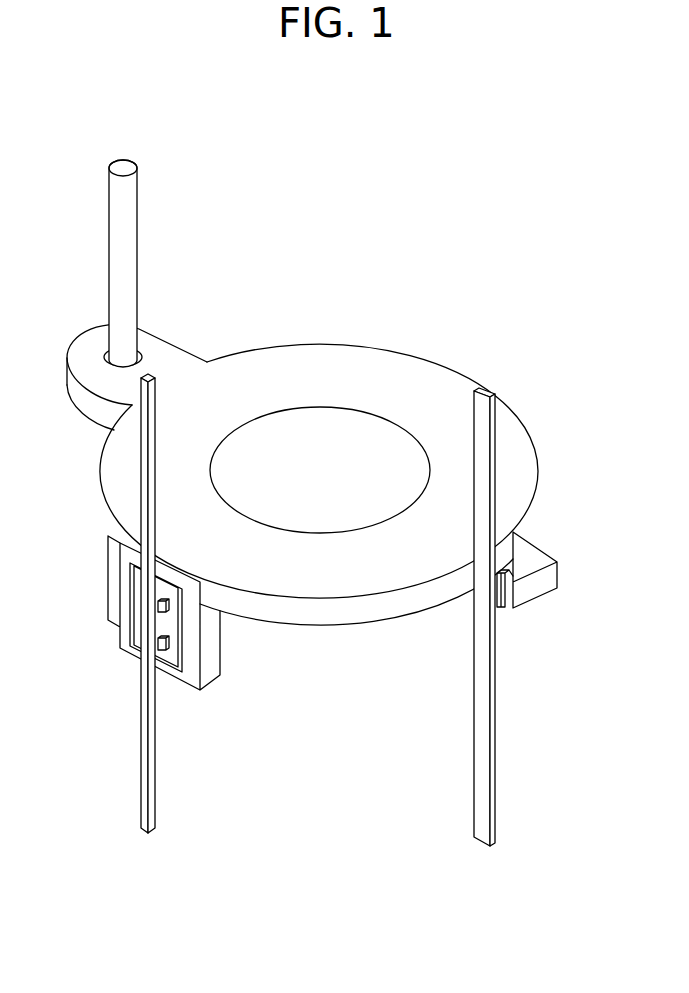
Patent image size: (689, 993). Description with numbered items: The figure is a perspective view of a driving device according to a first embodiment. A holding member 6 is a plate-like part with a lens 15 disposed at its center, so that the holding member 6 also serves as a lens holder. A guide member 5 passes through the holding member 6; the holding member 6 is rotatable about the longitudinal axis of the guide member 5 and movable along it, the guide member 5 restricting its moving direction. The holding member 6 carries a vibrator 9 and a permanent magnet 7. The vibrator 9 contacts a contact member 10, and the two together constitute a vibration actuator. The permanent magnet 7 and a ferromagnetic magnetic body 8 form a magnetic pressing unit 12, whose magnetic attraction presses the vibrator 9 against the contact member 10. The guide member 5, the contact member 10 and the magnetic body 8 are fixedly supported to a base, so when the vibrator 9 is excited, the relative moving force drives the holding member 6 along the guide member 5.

The guide member 5 is at (121, 217).
The holding member 6 is at (302, 456).
The lens 15 is at (320, 472).
The contact member 10 is at (143, 465).
The vibrator 9 is at (167, 627).
The permanent magnet 7 is at (501, 592).
The magnetic body 8 is at (578, 626).
The magnetic pressing unit 12 is at (549, 617).